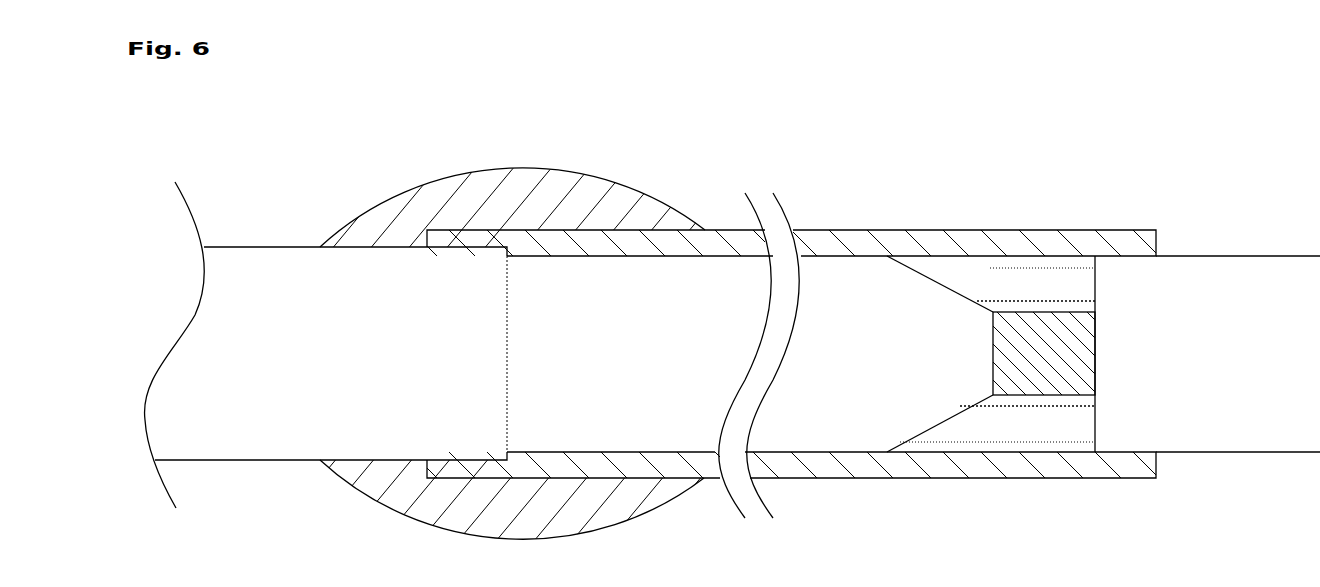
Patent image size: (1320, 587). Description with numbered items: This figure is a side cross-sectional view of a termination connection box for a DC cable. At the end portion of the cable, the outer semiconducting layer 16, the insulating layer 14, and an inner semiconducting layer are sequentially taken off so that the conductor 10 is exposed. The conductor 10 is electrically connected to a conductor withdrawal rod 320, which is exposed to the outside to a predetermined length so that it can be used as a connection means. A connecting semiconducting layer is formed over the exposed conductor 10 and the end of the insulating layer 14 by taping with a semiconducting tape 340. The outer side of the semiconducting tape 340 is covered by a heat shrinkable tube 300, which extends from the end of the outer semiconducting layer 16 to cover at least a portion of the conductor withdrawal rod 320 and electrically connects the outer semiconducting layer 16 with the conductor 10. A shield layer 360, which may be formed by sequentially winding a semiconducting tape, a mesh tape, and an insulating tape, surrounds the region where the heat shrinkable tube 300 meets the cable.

The outer semiconducting layer 16 is at (297, 300).
The shield layer 360 is at (525, 212).
The heat shrinkable tube 300 is at (1072, 245).
The insulating layer 14 is at (862, 300).
The semiconducting tape 340 is at (972, 275).
The conductor 10 is at (1032, 340).
The conductor withdrawal rod 320 is at (1245, 283).